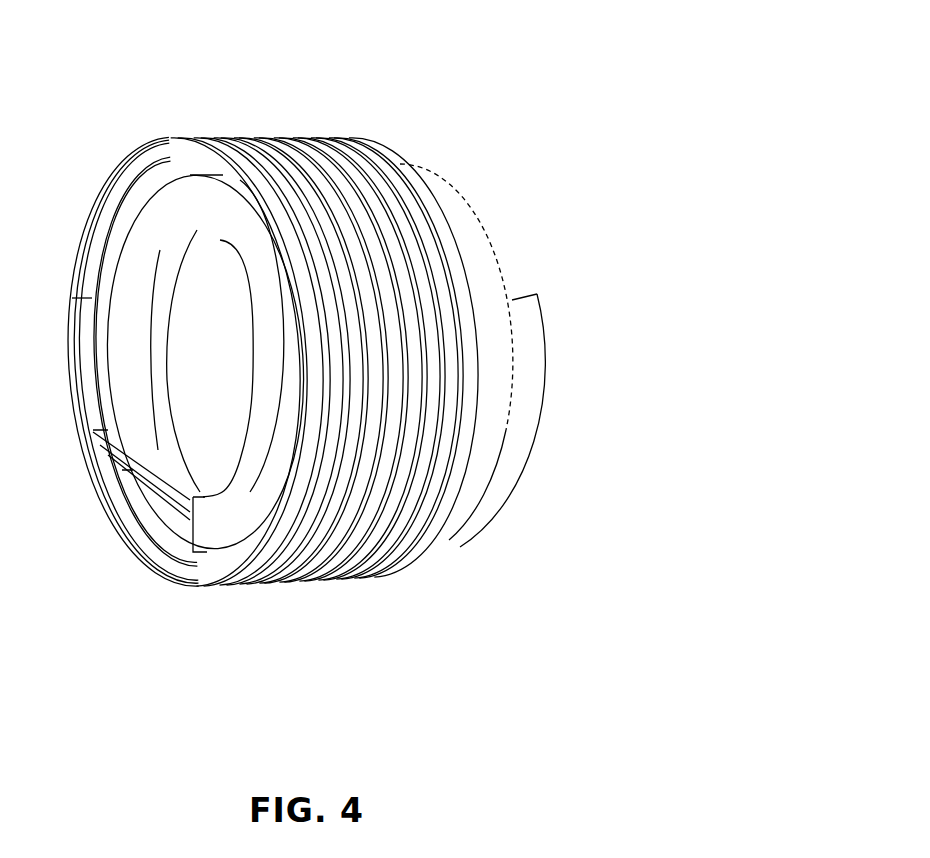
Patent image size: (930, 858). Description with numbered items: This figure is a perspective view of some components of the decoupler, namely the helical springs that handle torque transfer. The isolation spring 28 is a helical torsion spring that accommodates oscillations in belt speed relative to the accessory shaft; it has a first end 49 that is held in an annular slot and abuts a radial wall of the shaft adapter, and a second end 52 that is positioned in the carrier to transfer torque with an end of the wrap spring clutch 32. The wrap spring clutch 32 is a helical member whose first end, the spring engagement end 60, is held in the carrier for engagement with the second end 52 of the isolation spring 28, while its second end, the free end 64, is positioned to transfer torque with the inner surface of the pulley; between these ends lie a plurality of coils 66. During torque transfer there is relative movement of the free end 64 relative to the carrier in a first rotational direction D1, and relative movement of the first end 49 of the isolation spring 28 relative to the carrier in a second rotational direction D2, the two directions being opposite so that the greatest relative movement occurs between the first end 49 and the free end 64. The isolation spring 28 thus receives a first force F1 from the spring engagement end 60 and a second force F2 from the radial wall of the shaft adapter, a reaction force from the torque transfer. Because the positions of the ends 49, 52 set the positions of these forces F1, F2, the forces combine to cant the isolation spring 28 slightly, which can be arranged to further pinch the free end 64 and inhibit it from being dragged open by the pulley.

The isolation spring 28 is at (468, 202).
The wrap spring clutch 32 is at (388, 192).
The first end 49 is at (542, 338).
The second end 52 is at (207, 532).
The spring engagement end 60 is at (168, 498).
The free end 64 is at (385, 578).
The coils 66 is at (288, 146).
The first force F1 is at (188, 522).
The second force F2 is at (520, 295).
The first rotational direction D1 is at (497, 440).
The second rotational direction D2 is at (562, 371).